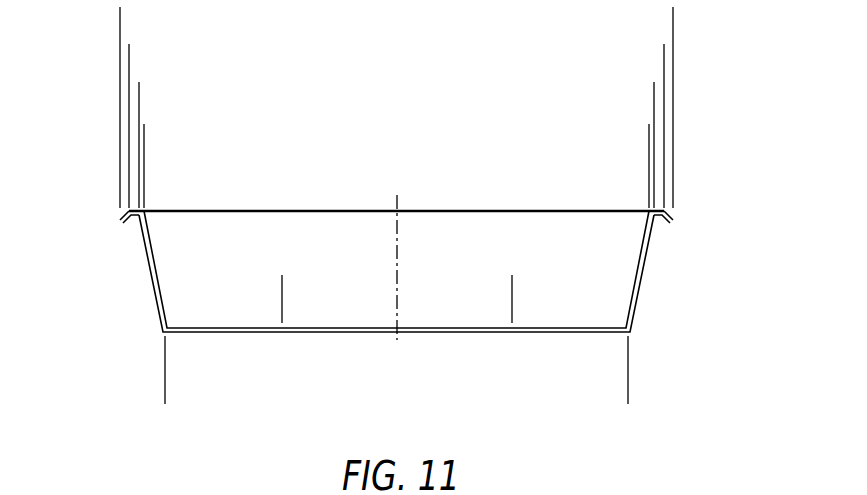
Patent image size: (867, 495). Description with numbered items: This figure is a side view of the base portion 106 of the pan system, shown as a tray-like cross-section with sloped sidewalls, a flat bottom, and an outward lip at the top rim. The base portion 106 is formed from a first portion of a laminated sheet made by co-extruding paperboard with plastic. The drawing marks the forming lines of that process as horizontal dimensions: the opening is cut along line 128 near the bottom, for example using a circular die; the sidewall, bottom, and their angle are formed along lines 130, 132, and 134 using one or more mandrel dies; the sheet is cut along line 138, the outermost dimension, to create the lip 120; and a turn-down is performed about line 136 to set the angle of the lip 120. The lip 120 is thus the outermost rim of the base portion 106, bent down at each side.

The base portion 106 is at (146, 268).
The lip 120 is at (121, 221).
The line 128 is at (512, 283).
The line 130 is at (628, 398).
The line 132 is at (649, 131).
The line 134 is at (654, 89).
The line 136 is at (664, 51).
The line 138 is at (673, 7).